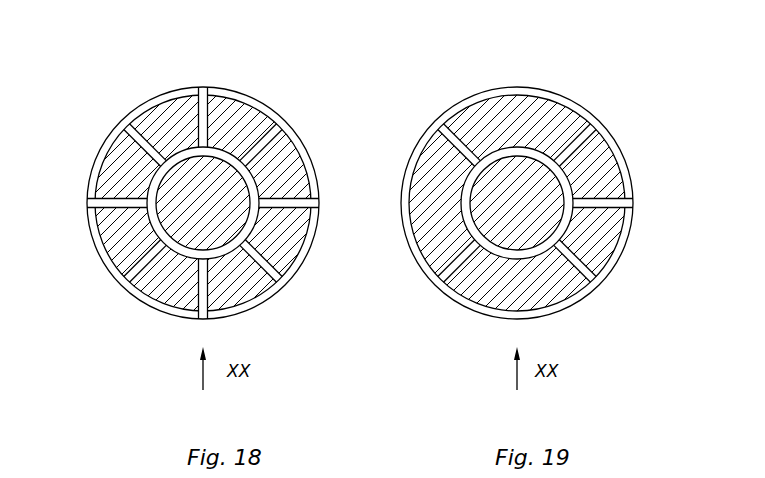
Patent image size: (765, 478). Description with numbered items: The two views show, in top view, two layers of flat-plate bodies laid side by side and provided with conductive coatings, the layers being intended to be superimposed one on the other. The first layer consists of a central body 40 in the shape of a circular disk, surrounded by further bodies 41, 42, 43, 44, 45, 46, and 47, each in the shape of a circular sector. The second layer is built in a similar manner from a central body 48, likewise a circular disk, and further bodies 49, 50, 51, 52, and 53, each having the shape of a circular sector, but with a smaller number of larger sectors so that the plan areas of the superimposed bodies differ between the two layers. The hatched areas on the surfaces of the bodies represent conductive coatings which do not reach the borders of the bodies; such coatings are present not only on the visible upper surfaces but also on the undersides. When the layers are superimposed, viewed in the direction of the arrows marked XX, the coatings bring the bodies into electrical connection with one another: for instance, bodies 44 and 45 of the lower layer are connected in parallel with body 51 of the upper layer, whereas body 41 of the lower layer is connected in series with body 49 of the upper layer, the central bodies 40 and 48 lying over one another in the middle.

In FIG. 18, the central body 40 is at (240, 232).
In FIG. 18, the body 41 is at (302, 155).
In FIG. 18, the body 42 is at (245, 98).
In FIG. 18, the body 43 is at (167, 93).
In FIG. 18, the body 44 is at (100, 158).
In FIG. 18, the body 45 is at (98, 247).
In FIG. 18, the body 46 is at (157, 307).
In FIG. 18, the body 47 is at (272, 292).
In FIG. 19, the central body 48 is at (562, 213).
In FIG. 19, the body 49 is at (618, 156).
In FIG. 19, the body 50 is at (557, 95).
In FIG. 19, the body 51 is at (405, 193).
In FIG. 19, the body 52 is at (485, 310).
In FIG. 19, the body 53 is at (608, 265).